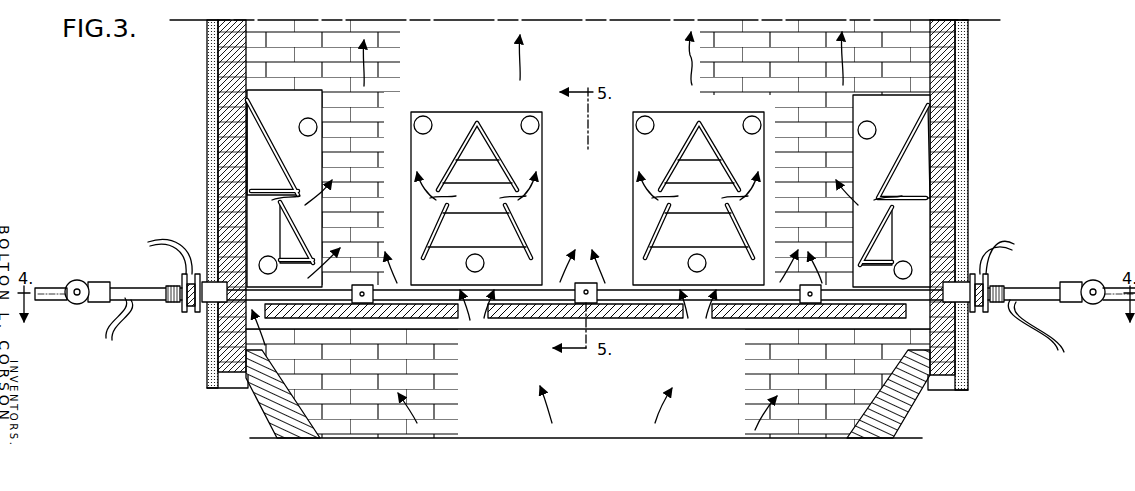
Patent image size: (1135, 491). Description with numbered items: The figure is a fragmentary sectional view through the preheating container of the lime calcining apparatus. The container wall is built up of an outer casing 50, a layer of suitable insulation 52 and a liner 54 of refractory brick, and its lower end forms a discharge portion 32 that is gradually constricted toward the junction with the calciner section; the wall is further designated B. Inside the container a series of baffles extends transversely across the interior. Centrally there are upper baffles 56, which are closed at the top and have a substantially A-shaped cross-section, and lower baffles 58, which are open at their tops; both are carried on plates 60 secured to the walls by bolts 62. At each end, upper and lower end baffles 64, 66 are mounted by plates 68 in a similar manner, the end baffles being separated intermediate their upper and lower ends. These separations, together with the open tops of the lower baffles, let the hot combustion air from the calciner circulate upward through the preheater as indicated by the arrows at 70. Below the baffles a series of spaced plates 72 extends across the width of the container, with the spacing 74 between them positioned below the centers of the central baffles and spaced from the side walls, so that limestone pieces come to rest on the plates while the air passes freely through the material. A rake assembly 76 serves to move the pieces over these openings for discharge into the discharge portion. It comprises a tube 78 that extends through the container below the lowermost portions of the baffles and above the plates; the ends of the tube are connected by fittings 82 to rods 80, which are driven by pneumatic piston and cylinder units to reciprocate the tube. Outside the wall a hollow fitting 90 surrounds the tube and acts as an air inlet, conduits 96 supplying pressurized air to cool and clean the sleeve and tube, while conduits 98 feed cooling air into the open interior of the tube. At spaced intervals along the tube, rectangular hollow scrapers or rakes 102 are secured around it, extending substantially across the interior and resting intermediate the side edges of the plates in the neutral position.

The discharge portion 32 is at (905, 415).
The outer casing 50 is at (968, 203).
The layer of insulation 52 is at (962, 95).
The liner 54 is at (933, 22).
The side wall B is at (972, 146).
The upper baffles 56 is at (490, 148).
The lower baffles 58 is at (506, 213).
The plates 60 is at (458, 112).
The bolts 62 is at (423, 116).
The upper end baffles 64 is at (262, 126).
The lower end baffles 66 is at (292, 243).
The end plates 68 is at (309, 163).
The arrows indicating air circulation 70 is at (687, 63).
The spaced plates 72 is at (497, 319).
The spacing between plates 74 is at (702, 328).
The rake assembly 76 is at (168, 286).
The tube 78 is at (578, 285).
The rods 80 is at (52, 287).
The fittings 82 is at (90, 302).
The hollow fitting 90 is at (188, 312).
The conduits 96 is at (156, 246).
The conduits 98 is at (111, 339).
The scrapers or rakes 102 is at (362, 285).